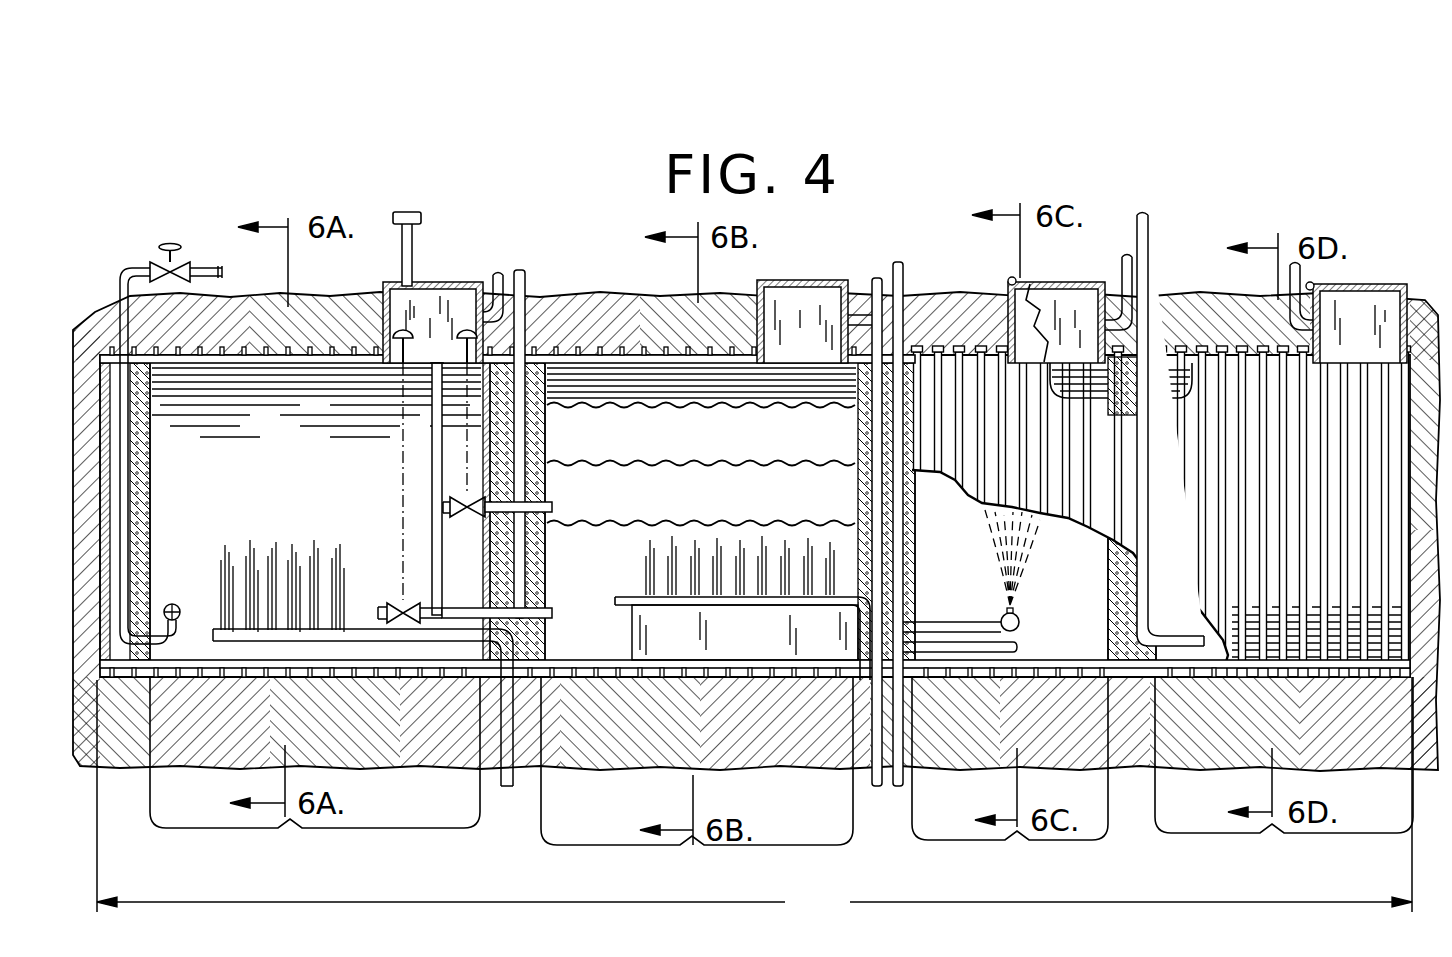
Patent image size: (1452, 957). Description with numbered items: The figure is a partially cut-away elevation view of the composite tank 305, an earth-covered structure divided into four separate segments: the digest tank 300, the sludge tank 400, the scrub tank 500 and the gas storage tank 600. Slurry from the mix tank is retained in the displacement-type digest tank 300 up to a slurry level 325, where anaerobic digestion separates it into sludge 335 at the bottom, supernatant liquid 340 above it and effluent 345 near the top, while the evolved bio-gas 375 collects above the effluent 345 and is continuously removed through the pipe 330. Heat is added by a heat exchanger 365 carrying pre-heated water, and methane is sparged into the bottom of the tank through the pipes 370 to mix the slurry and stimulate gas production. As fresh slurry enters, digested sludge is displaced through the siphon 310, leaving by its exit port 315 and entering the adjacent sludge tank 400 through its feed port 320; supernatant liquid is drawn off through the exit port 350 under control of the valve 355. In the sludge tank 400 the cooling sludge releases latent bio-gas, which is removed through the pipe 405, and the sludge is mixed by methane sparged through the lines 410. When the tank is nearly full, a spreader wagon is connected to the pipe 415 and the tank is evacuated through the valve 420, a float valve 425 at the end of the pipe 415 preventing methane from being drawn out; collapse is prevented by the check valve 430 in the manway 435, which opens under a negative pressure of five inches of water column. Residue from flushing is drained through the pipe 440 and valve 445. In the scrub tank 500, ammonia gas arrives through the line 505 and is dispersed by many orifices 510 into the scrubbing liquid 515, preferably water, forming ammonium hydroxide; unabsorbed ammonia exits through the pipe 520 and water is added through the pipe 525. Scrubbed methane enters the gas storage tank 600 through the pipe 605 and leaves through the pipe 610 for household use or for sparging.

The digest tank 300 is at (697, 779).
The composite tank 305 is at (754, 795).
The siphon 310 is at (437, 403).
The exit port 315 is at (434, 368).
The feed port 320 is at (553, 612).
The slurry level 325 is at (590, 405).
The pipe 330 is at (877, 278).
The sludge 335 is at (567, 561).
The supernatant liquid 340 is at (695, 506).
The effluent 345 is at (697, 446).
The exit port 350 is at (553, 504).
The valve 355 is at (452, 510).
The heat exchanger 365 is at (722, 643).
The pipes 370 is at (622, 605).
The bio-gas 375 is at (712, 396).
The sludge tank 400 is at (315, 617).
The pipe 405 is at (498, 275).
The lines 410 is at (260, 630).
The pipe 415 is at (224, 272).
The valve 420 is at (196, 262).
The float valve 425 is at (174, 603).
The check valve 430 is at (412, 240).
The manway 435 is at (386, 282).
The pipe 440 is at (428, 608).
The valve 445 is at (396, 604).
The scrub tank 500 is at (1010, 776).
The line 505 is at (902, 268).
The orifices 510 is at (1018, 612).
The scrubbing liquid 515 is at (1048, 568).
The pipe 520 is at (1122, 265).
The pipe 525 is at (1020, 646).
The gas storage tank 600 is at (1284, 739).
The pipe 605 is at (1302, 270).
The pipe 610 is at (1150, 222).